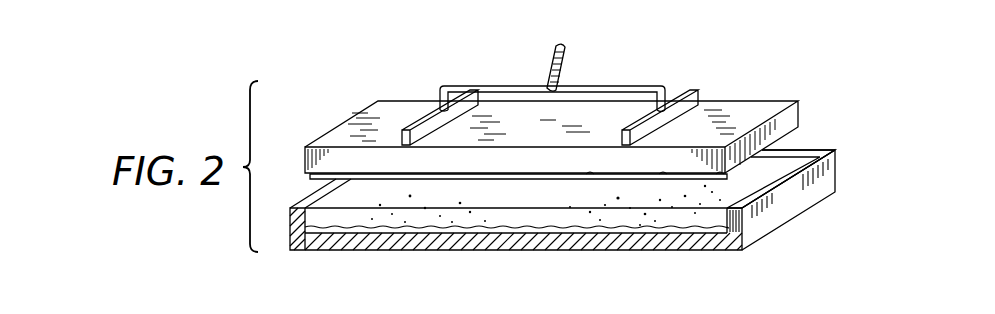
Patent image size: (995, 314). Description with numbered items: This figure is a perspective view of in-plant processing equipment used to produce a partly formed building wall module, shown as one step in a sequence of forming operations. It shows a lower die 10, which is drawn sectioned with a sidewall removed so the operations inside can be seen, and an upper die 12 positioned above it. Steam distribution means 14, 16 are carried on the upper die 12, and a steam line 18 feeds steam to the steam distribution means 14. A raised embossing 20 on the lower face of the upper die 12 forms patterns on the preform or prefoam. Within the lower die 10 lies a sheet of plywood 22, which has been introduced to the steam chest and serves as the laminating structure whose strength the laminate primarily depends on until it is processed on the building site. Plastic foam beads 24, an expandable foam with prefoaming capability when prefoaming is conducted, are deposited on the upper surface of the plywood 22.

The lower die 10 is at (790, 205).
The upper die 12 is at (798, 101).
The steam distribution means 14 is at (661, 92).
The steam distribution means 16 is at (452, 104).
The steam line 18 is at (567, 63).
The raised embossing 20 is at (835, 150).
The sheet of plywood 22 is at (352, 229).
The plastic foam beads 24 is at (532, 200).